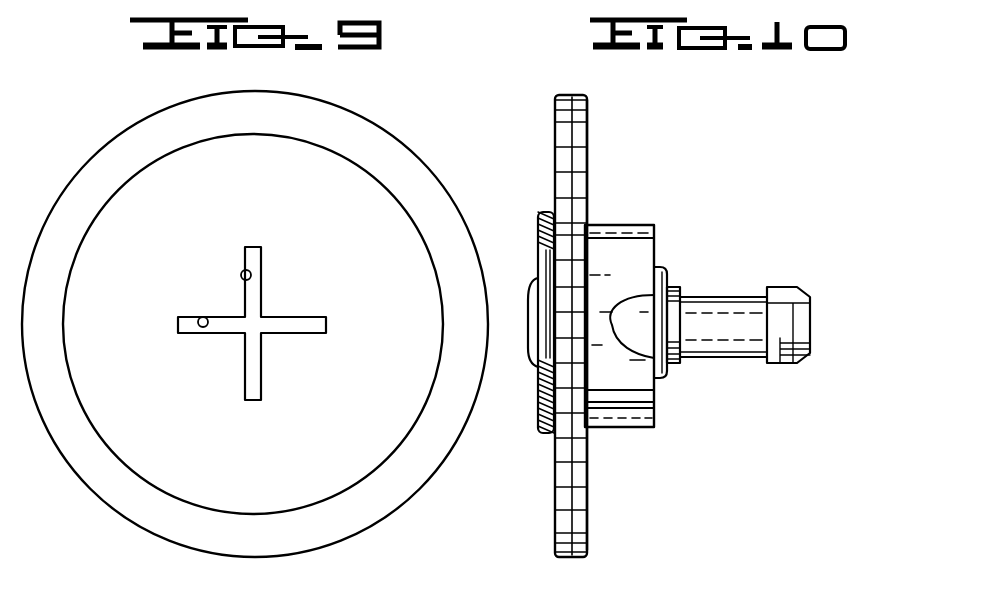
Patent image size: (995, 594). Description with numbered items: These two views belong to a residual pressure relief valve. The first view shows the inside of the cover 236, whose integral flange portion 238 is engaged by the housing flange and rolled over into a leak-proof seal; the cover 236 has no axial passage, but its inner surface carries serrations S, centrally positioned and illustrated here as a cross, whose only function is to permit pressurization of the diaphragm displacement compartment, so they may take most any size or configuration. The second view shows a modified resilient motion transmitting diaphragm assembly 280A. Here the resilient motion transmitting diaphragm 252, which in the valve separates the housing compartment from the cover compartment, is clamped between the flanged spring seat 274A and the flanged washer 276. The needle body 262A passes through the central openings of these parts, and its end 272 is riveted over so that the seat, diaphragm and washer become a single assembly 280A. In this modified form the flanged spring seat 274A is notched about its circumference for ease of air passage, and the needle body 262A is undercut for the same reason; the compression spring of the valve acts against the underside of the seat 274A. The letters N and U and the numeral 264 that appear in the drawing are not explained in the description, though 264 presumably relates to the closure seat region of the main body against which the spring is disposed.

In FIG. 9, the flange portion 238 is at (142, 144).
In FIG. 9, the cover 236 is at (350, 233).
In FIG. 9, the serrations S is at (202, 317).
In FIG. 10, the resilient motion transmitting diaphragm 252 is at (557, 512).
In FIG. 10, the modified resilient motion transmitting diaphragm assembly 280A is at (600, 166).
In FIG. 10, the end of the hollow needle 272 is at (532, 283).
In FIG. 10, the flanged washer 276 is at (547, 436).
In FIG. 10, the flanged spring seat 274A is at (630, 265).
In FIG. 10, the nut end faces N is at (643, 227).
In FIG. 10, the lock washer 264 is at (660, 387).
In FIG. 10, the needle body 262A is at (797, 366).
In FIG. 10, the threaded shank U is at (703, 378).